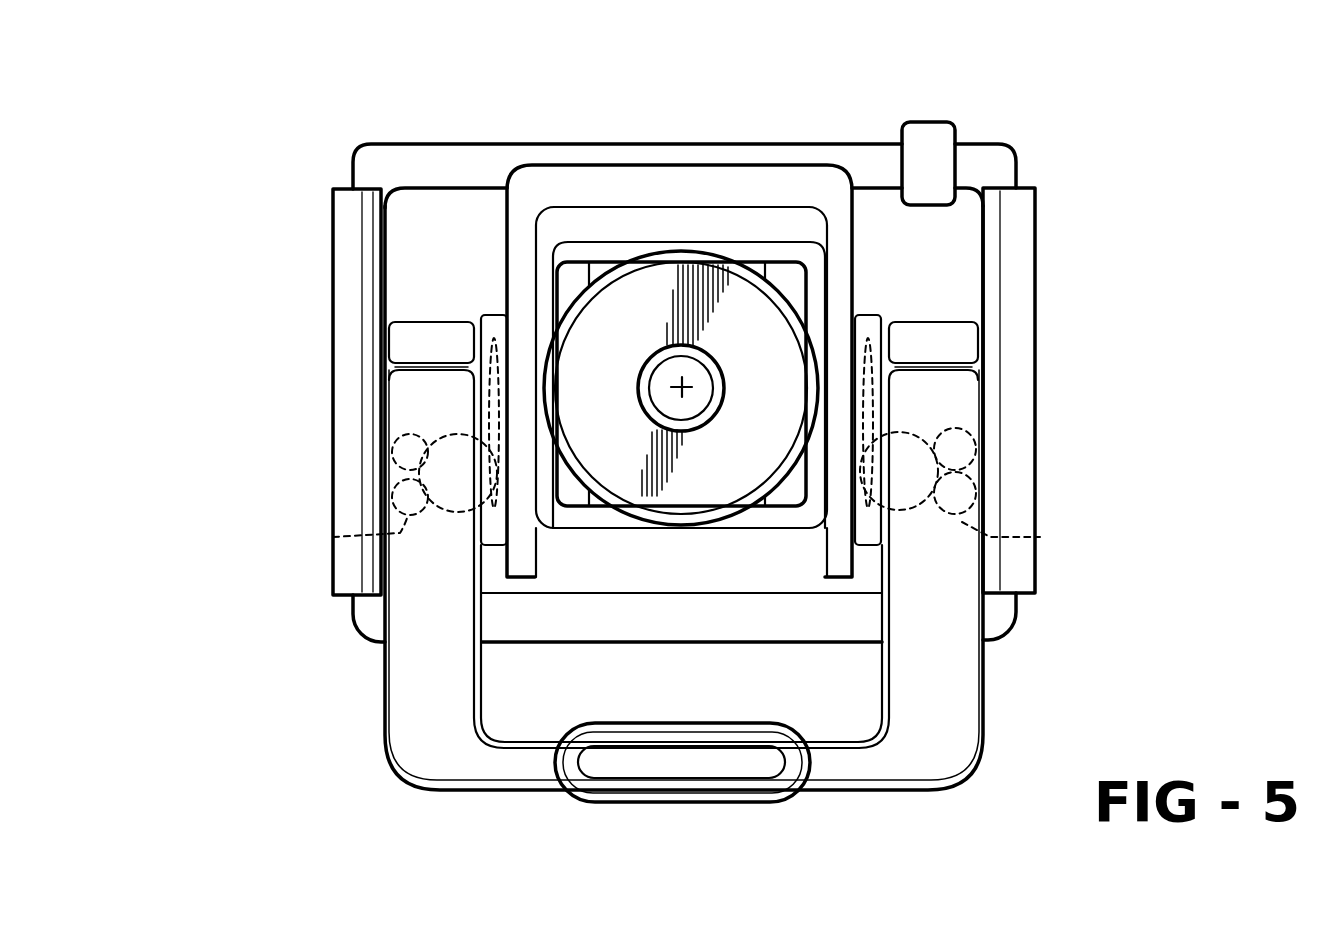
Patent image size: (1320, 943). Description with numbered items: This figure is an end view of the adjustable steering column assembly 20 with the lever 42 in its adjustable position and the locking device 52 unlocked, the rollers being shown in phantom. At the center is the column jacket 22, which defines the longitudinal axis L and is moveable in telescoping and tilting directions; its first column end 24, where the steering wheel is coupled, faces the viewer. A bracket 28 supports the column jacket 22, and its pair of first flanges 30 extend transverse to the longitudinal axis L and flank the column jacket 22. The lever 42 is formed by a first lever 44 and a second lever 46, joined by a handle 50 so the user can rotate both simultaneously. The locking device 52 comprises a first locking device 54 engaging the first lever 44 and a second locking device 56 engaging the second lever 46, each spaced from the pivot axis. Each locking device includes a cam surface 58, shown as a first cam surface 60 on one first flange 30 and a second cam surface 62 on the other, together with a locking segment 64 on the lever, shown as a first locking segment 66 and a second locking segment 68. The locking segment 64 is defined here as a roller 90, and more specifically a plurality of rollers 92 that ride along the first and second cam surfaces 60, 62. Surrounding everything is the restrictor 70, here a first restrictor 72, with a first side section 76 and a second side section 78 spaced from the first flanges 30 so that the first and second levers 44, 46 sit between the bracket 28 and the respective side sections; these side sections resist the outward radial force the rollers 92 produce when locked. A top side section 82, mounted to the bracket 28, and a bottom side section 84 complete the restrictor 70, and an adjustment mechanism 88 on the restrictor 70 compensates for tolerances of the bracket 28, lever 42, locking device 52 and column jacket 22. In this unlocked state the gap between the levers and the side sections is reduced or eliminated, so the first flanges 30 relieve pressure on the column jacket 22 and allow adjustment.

The adjustable steering column assembly 20 is at (1208, 222).
The column jacket 22 is at (753, 278).
The first column end 24 is at (709, 352).
The bracket 28 is at (683, 178).
The first flanges 30 is at (510, 366).
The lever 42 is at (342, 676).
The first lever 44 is at (410, 690).
The second lever 46 is at (950, 675).
The handle 50 is at (709, 741).
The locking device 52 is at (242, 436).
The first locking device 54 is at (489, 580).
The second locking device 56 is at (872, 577).
The cam surface 58 is at (516, 362).
The first cam surface 60 is at (543, 487).
The second cam surface 62 is at (847, 452).
The locking segment 64 is at (319, 486).
The first locking segment 66 is at (306, 398).
The second locking segment 68 is at (1078, 470).
The restrictor 70 is at (360, 130).
The first restrictor 72 is at (352, 150).
The first side section 76 is at (352, 610).
The second side section 78 is at (1000, 615).
The top side section 82 is at (455, 168).
The bottom side section 84 is at (627, 623).
The adjustment mechanism 88 is at (926, 120).
The roller 90 is at (454, 546).
The rollers 92 is at (409, 432).
The longitudinal axis L is at (686, 392).